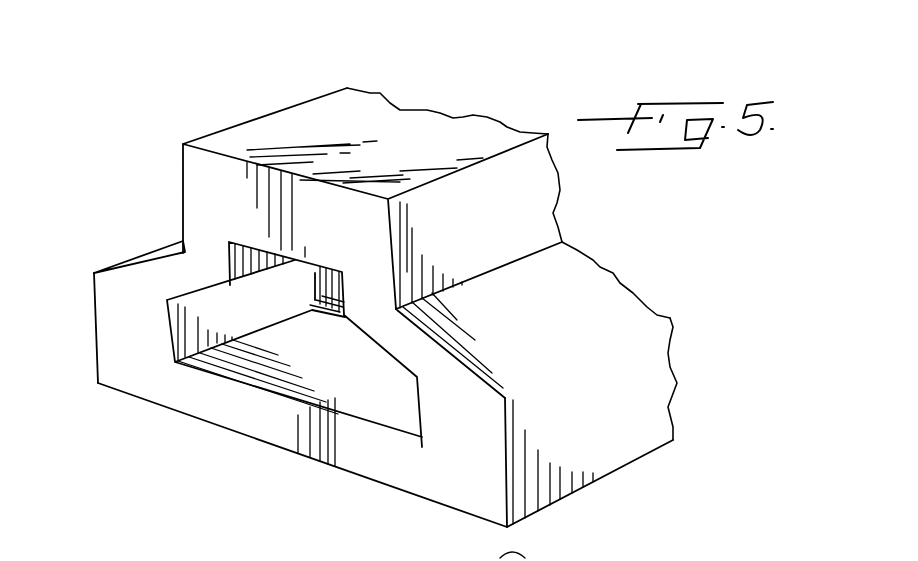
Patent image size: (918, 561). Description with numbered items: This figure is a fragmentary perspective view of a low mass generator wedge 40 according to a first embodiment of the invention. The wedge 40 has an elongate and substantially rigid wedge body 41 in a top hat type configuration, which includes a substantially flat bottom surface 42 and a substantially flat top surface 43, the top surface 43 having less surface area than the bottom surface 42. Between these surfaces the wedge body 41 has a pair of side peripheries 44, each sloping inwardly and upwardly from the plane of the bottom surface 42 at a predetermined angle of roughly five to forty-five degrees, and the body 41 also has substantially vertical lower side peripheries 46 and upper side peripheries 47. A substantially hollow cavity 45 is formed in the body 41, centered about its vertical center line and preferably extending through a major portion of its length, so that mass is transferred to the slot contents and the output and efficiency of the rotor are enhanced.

The wedge 40 is at (432, 291).
The wedge body 41 is at (122, 340).
The bottom surface 42 is at (292, 455).
The top surface 43 is at (292, 123).
The side peripheries 44 is at (158, 245).
The hollow cavity 45 is at (307, 358).
The lower side peripheries 46 is at (630, 438).
The upper side peripheries 47 is at (545, 187).